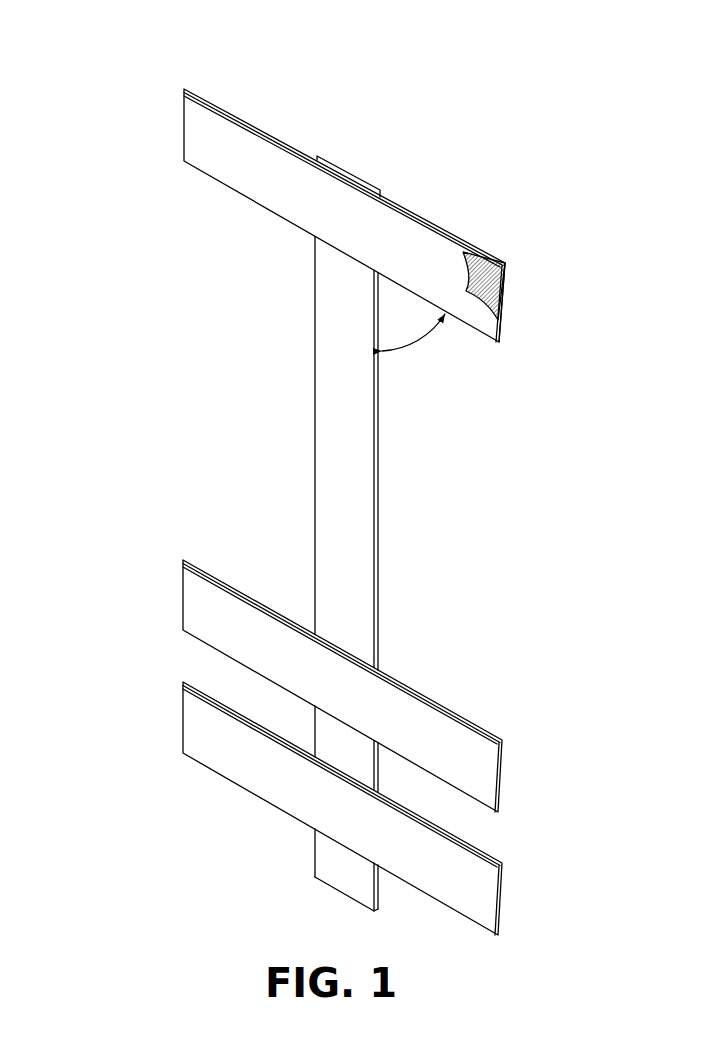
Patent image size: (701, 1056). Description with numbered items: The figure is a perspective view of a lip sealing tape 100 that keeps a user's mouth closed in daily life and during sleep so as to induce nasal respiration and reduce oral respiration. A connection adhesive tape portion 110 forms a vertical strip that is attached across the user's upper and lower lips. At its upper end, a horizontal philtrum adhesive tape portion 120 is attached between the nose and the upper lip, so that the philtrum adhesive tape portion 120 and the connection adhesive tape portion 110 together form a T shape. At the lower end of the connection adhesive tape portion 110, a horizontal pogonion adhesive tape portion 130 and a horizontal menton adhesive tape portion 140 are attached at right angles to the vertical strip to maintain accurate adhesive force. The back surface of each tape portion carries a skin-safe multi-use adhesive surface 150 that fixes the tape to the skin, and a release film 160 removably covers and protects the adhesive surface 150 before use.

The lip sealing tape 100 is at (115, 56).
The connection adhesive tape portion 110 is at (313, 383).
The philtrum adhesive tape portion 120 is at (238, 111).
The pogonion adhesive tape portion 130 is at (181, 595).
The menton adhesive tape portion 140 is at (181, 717).
The multi-use adhesive surface 150 is at (490, 283).
The release film 160 is at (493, 268).